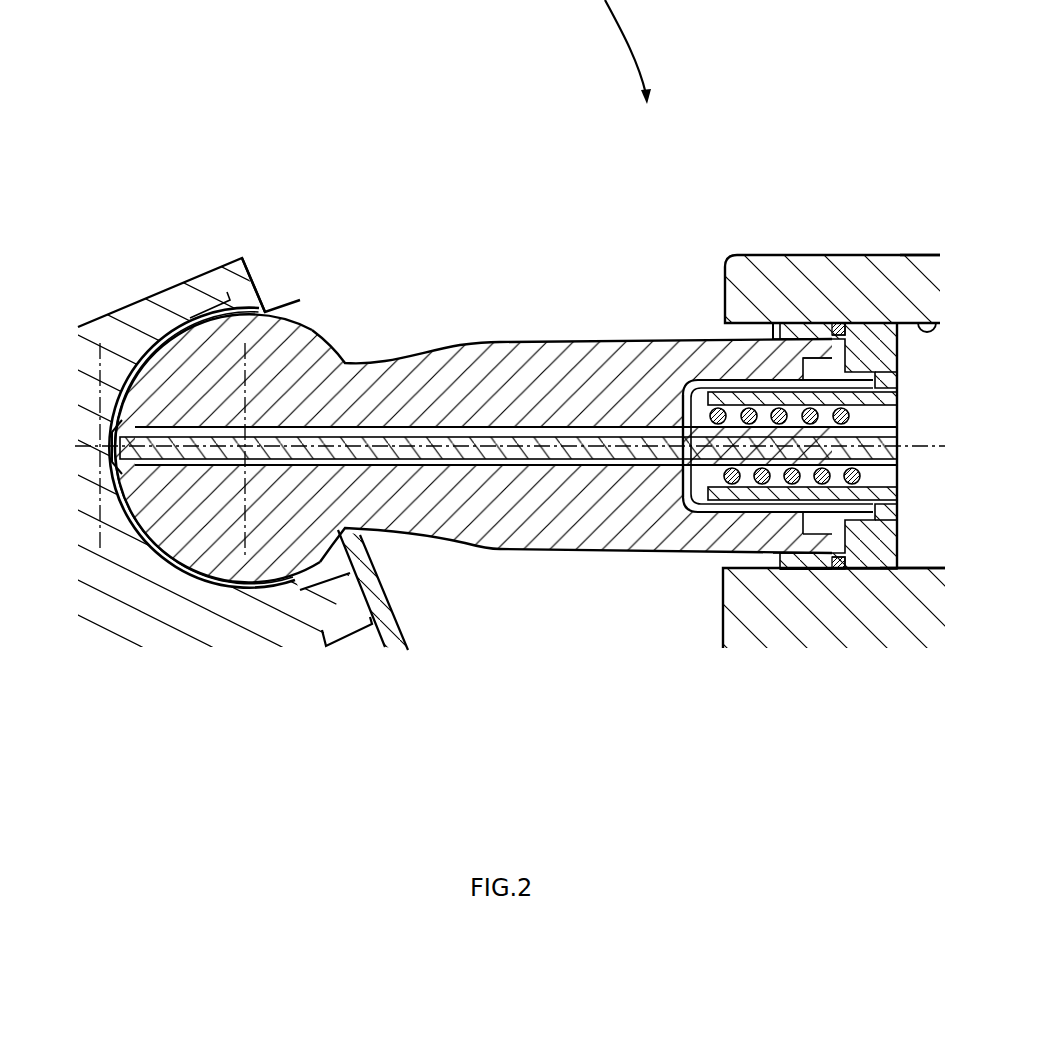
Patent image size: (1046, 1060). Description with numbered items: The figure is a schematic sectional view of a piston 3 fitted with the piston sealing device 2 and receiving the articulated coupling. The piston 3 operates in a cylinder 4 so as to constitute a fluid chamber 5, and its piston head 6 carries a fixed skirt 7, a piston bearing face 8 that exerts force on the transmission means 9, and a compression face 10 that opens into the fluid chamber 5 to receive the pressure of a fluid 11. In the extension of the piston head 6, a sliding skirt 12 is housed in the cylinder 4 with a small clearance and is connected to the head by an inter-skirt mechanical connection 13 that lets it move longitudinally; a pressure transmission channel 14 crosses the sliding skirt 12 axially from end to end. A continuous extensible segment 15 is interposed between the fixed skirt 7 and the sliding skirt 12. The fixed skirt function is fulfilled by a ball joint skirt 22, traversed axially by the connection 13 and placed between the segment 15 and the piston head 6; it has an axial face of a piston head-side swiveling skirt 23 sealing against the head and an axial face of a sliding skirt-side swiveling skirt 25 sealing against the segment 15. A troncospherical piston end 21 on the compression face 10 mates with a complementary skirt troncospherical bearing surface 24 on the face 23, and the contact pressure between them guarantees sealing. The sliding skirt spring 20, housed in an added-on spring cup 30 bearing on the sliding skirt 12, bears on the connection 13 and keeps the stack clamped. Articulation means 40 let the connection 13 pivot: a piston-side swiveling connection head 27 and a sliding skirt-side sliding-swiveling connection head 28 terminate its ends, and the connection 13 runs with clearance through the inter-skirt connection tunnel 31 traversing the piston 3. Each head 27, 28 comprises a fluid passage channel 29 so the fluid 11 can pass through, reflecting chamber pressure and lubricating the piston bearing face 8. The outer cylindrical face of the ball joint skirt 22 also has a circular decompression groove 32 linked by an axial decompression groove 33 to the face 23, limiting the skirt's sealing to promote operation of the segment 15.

The piston sealing device 2 is at (841, 322).
The piston 3 is at (462, 372).
The cylinder 4 is at (938, 323).
The fluid chamber 5 is at (919, 514).
The piston head 6 is at (516, 363).
The fixed skirt 7 is at (836, 298).
The piston bearing face 8 is at (148, 335).
The transmission means 9 is at (182, 293).
The compression face 10 is at (867, 338).
The fluid 11 is at (915, 568).
The sliding skirt 12 is at (897, 348).
The inter-skirt mechanical connection 13 is at (525, 445).
The pressure transmission channel 14 is at (860, 382).
The continuous extensible segment 15 is at (840, 568).
The sliding skirt spring 20 is at (700, 415).
The troncospherical piston end 21 is at (798, 340).
The ball joint skirt 22 is at (797, 322).
The axial face of a piston head-side swiveling skirt 23 is at (810, 372).
The skirt troncospherical bearing surface 24 is at (780, 542).
The axial face of a sliding skirt-side swiveling skirt 25 is at (867, 568).
The piston-side swiveling connection head 27 is at (156, 527).
The sliding skirt-side sliding-swiveling connection head 28 is at (887, 432).
The fluid passage channel 29 is at (203, 337).
The added-on spring cup 30 is at (707, 526).
The inter-skirt connection tunnel 31 is at (449, 456).
The circular decompression groove 32 is at (817, 568).
The axial decompression groove 33 is at (795, 568).
The articulation means 40 is at (111, 410).